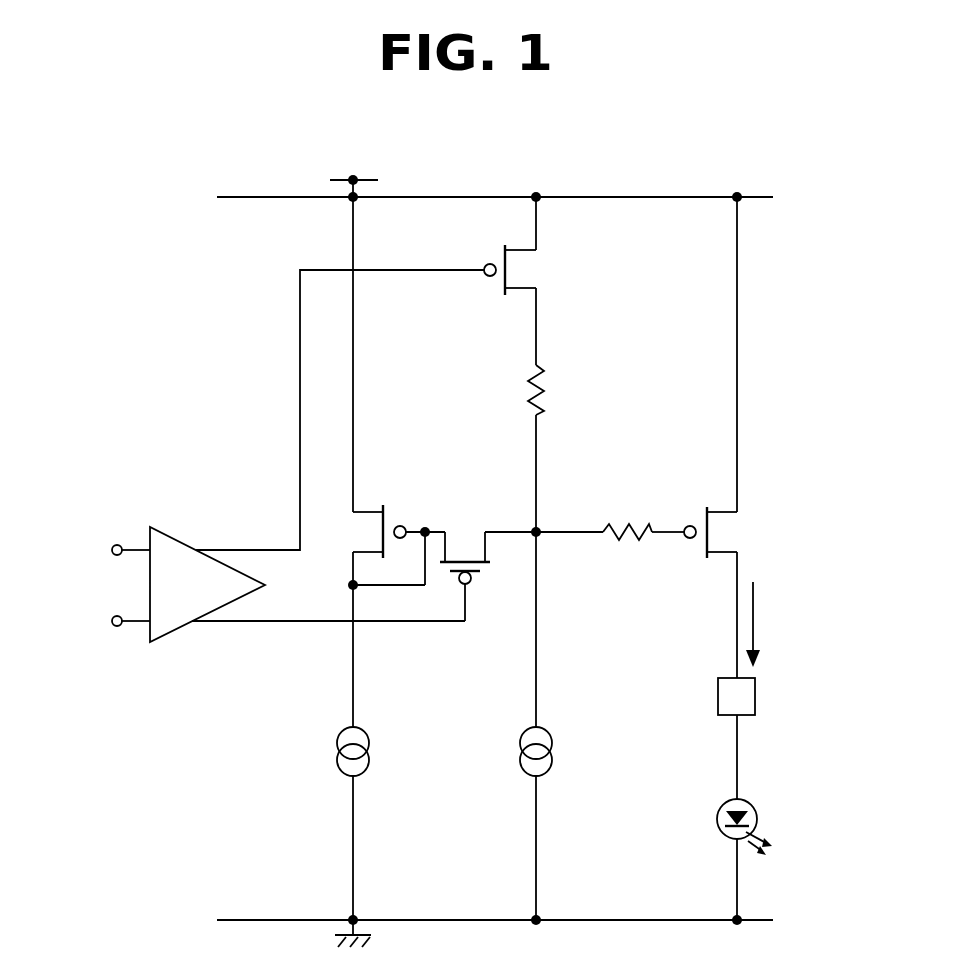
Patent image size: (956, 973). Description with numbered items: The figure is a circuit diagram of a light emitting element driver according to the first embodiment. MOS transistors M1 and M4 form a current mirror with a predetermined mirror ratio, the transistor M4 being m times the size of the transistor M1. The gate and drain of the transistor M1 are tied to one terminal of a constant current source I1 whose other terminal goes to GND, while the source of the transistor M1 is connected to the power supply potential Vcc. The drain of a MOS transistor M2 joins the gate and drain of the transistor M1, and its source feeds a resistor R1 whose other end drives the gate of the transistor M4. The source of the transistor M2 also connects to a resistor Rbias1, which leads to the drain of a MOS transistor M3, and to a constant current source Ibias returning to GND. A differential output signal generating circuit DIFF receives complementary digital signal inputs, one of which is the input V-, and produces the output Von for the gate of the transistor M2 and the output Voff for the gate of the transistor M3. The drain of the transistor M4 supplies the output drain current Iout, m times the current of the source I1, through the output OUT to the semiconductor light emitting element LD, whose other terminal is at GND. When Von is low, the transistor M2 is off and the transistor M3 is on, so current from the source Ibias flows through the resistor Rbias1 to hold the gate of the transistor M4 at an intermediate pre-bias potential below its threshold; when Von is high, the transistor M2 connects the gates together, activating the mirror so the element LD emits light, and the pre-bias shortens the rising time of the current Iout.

The power supply potential Vcc is at (330, 183).
The ground GND is at (324, 936).
The MOS transistor M1 is at (385, 531).
The MOS transistor M2 is at (488, 561).
The MOS transistor M3 is at (529, 246).
The MOS transistor M4 is at (723, 377).
The differential output signal generating circuit DIFF is at (207, 584).
The complementary digital signal input V- is at (125, 535).
The output of differential output signal generating circuit Voff is at (339, 410).
The output of differential output signal generating circuit Von is at (328, 639).
The resistor Rbias1 is at (576, 390).
The resistor R1 is at (610, 548).
The constant current source I1 is at (338, 751).
The constant current source Ibias is at (506, 751).
The output drain current Iout is at (775, 624).
The output terminal OUT is at (762, 696).
The semiconductor light emitting element LD is at (752, 817).